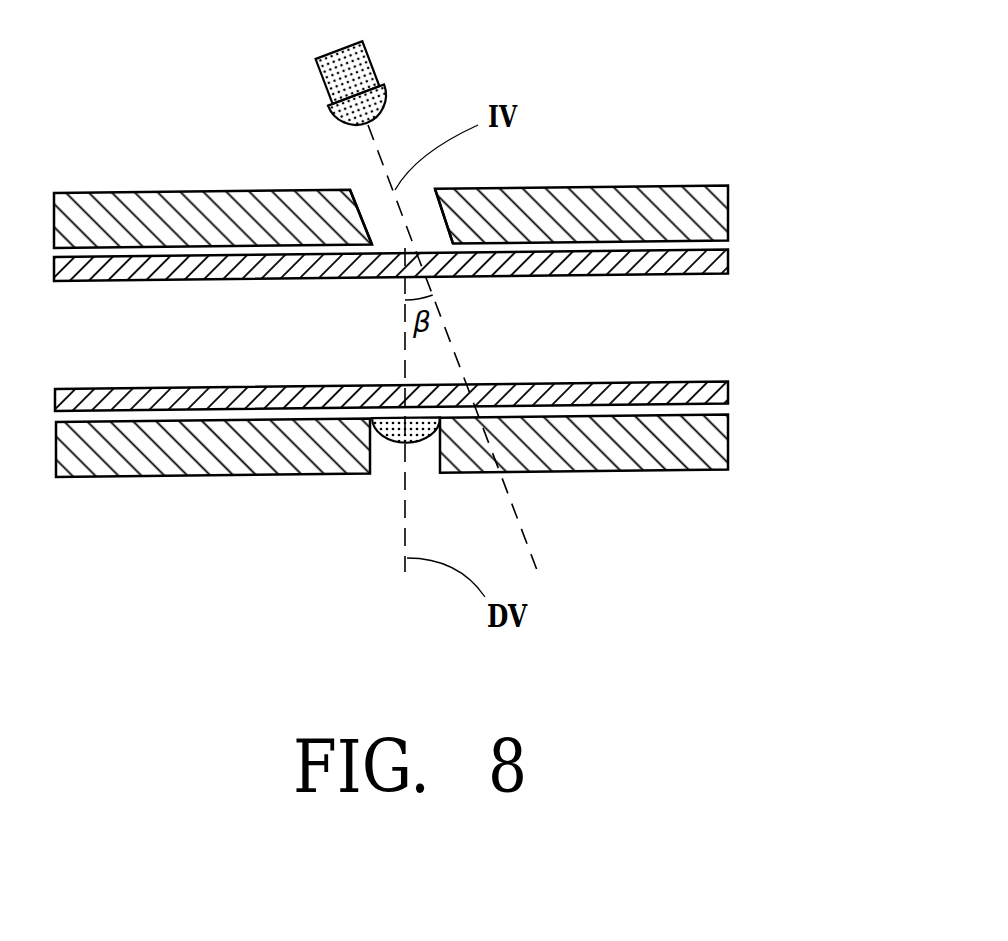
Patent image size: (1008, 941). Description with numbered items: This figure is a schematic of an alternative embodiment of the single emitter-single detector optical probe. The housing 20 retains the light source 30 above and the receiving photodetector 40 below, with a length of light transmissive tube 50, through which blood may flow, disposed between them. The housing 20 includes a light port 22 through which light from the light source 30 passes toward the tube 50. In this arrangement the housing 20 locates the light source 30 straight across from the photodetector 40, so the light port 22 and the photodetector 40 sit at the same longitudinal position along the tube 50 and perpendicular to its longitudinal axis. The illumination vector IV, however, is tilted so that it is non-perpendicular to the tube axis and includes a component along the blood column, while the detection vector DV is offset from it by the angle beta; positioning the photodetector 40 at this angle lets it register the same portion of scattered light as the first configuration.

The housing 20 is at (733, 183).
The light port 22 is at (372, 193).
The light source 30 is at (360, 70).
The photodetector 40 is at (392, 447).
The light transmissive tube 50 is at (730, 260).